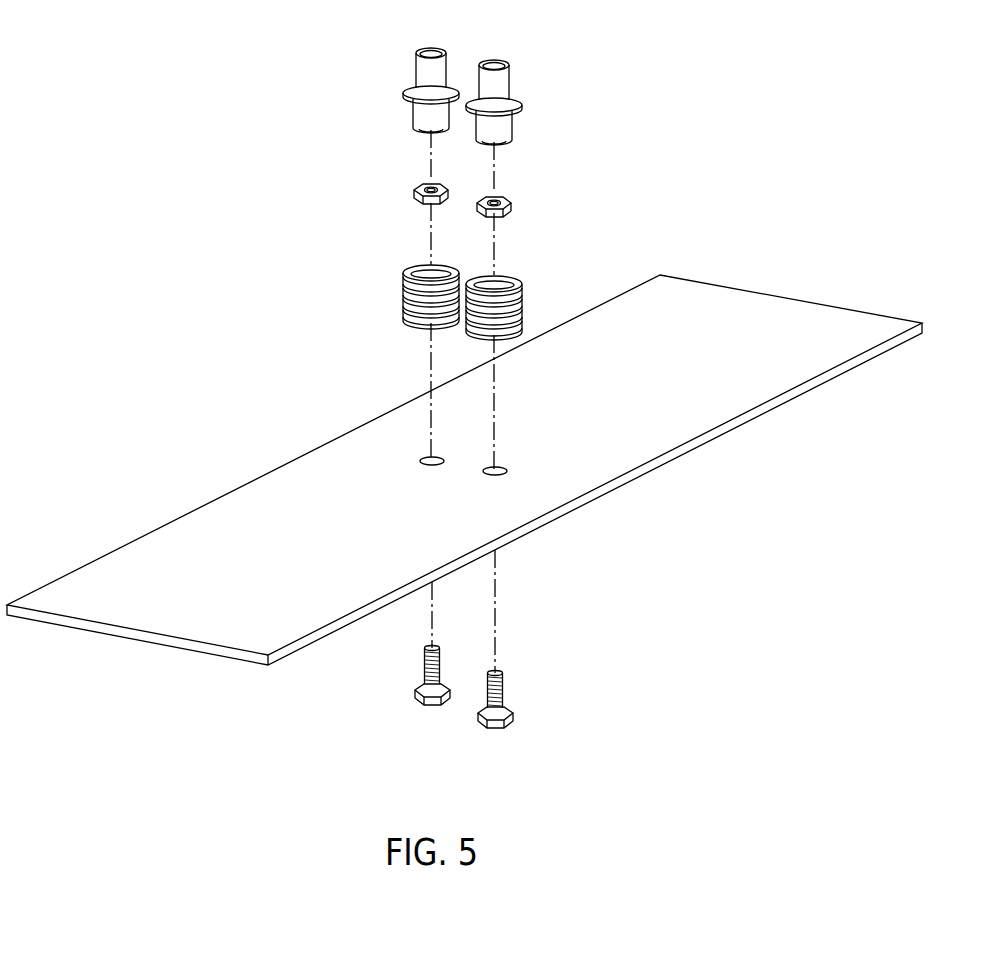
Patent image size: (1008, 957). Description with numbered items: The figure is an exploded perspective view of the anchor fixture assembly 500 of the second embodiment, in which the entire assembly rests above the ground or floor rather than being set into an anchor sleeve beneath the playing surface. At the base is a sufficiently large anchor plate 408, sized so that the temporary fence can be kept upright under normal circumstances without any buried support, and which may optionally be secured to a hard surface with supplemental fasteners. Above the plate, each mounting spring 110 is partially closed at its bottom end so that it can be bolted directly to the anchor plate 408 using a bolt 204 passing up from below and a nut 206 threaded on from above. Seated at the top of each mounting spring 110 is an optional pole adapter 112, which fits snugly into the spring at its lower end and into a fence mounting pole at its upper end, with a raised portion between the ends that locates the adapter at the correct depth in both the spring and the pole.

The anchor fixture assembly 500 is at (224, 168).
The pole adapter 112 is at (420, 73).
The nut 206 is at (412, 191).
The mounting spring 110 is at (410, 320).
The anchor plate 408 is at (155, 545).
The bolt 204 is at (432, 705).